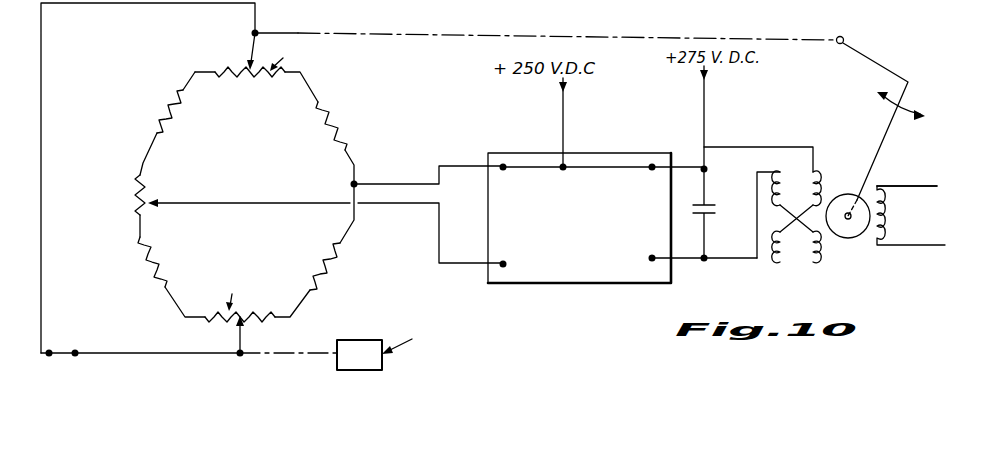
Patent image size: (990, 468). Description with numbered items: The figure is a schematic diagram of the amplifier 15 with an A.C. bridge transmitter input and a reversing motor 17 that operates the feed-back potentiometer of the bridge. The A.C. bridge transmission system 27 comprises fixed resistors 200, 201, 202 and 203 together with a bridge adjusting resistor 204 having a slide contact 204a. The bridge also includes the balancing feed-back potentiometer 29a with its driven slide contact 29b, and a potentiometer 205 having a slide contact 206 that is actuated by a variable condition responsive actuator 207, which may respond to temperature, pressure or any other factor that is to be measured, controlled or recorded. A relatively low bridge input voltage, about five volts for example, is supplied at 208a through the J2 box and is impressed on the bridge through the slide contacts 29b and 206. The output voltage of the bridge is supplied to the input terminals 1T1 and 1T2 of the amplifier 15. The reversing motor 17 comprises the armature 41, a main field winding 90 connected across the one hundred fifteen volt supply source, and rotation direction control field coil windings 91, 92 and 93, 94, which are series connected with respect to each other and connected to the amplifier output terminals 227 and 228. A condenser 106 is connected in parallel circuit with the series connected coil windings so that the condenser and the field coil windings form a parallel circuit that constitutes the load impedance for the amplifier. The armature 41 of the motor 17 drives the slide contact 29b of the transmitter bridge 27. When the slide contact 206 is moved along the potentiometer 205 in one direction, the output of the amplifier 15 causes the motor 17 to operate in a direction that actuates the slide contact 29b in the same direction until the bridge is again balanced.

The A.C. bridge transmission system 27 is at (268, 193).
The feed-back potentiometer 29a is at (244, 78).
The slide contact 29b is at (248, 47).
The fixed resistor 200 is at (329, 252).
The fixed resistor 201 is at (341, 129).
The fixed resistor 202 is at (144, 264).
The fixed resistor 203 is at (164, 111).
The bridge adjusting resistor 204 is at (152, 184).
The slide contact 204a is at (166, 207).
The potentiometer 205 is at (227, 324).
The slide contact 206 is at (244, 338).
The variable condition responsive actuator 207 is at (375, 364).
The bridge input voltage supply point 208a is at (62, 356).
The amplifier input terminal 1T1 is at (527, 138).
The amplifier input terminal 1T2 is at (501, 266).
The amplifier 15 is at (566, 252).
The amplifier output terminal 227 is at (649, 168).
The amplifier output terminal 228 is at (648, 259).
The condenser 106 is at (706, 205).
The reversing motor 17 is at (814, 167).
The rotation direction control field coil winding 91 is at (795, 180).
The rotation direction control field coil winding 92 is at (813, 262).
The rotation direction control field coil winding 93 is at (816, 185).
The rotation direction control field coil winding 94 is at (780, 262).
The armature 41 is at (870, 190).
The main field winding 90 is at (893, 213).